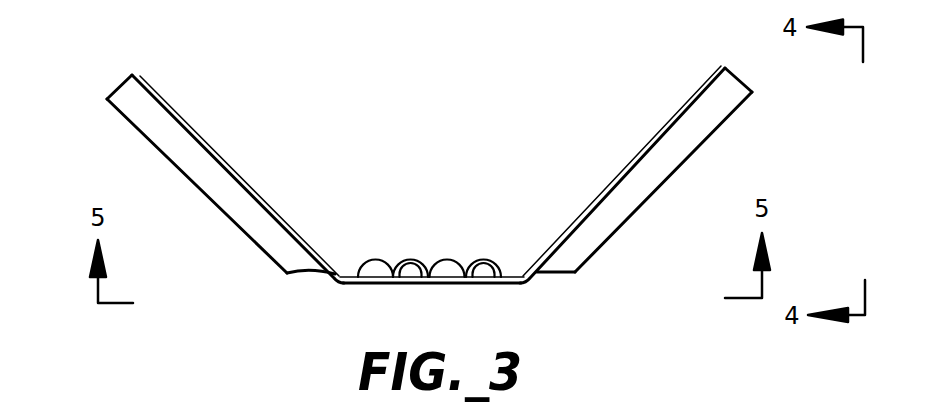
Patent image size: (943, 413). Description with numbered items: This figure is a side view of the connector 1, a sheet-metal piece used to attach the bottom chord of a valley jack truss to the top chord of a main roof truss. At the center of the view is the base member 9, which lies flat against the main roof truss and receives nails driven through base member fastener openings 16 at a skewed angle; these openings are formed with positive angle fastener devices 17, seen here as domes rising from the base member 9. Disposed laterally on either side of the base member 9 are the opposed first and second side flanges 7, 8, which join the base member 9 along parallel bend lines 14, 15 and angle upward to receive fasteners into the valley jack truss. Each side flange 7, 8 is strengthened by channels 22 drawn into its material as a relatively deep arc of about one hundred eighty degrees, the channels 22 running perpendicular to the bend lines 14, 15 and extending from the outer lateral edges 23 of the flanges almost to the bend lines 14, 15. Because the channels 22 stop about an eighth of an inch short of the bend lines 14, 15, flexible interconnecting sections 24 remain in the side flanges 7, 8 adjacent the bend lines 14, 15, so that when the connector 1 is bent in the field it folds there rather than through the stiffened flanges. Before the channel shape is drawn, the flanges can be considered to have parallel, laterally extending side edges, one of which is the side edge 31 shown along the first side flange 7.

The connector 1 is at (719, 71).
The first side flange 7 is at (148, 81).
The second side flange 8 is at (682, 107).
The base member 9 is at (352, 283).
The first bend line 14 is at (344, 272).
The second bend line 15 is at (505, 272).
The base member fastener openings 16 is at (410, 272).
The positive angle fastener devices 17 is at (393, 272).
The channels 22 is at (163, 153).
The outer lateral edges 23 is at (121, 86).
The flexible interconnecting sections 24 is at (341, 274).
The side edge 31 is at (190, 128).